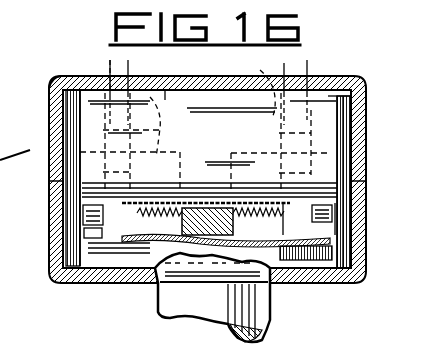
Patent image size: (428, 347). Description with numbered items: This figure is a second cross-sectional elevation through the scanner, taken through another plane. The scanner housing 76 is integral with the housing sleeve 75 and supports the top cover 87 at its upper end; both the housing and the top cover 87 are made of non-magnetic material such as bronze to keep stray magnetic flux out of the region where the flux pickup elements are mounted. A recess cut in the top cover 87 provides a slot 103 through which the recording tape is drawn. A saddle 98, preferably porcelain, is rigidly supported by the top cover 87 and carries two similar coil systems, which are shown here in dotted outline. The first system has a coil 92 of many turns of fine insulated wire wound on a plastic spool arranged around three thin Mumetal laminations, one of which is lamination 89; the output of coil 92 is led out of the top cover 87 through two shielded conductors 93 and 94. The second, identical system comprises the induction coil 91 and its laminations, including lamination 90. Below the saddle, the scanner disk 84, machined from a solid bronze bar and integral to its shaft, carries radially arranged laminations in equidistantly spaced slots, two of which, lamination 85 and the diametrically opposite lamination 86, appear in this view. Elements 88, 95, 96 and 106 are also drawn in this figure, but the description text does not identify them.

The housing sleeve 75 is at (165, 302).
The scanner housing 76 is at (362, 191).
The scanner disk 84 is at (78, 284).
The lamination 85 is at (52, 216).
The lamination 86 is at (342, 227).
The top cover 87 is at (72, 74).
The inner liner 88 is at (40, 178).
The lamination 89 is at (150, 138).
The lamination 90 is at (270, 162).
The induction coil 91 is at (255, 87).
The coil 92 is at (170, 72).
The shielded conductor 93 is at (132, 64).
The shielded conductor 94 is at (110, 64).
The conductor 95 is at (292, 62).
The conductor 96 is at (310, 70).
The saddle 98 is at (209, 152).
The slot 103 is at (15, 146).
The block 106 is at (210, 221).